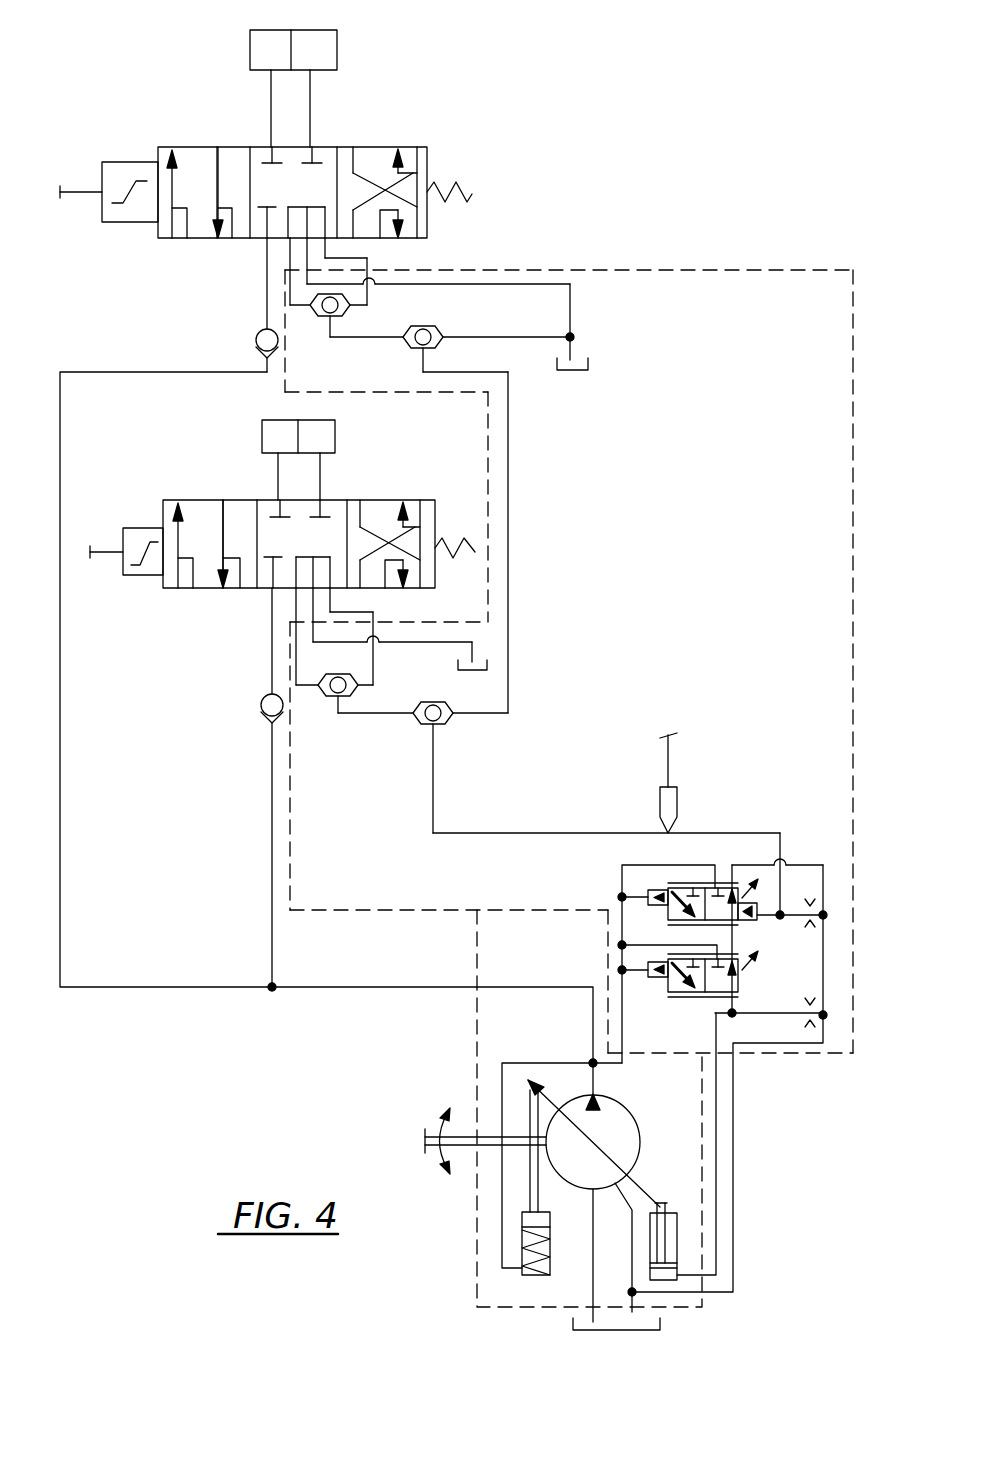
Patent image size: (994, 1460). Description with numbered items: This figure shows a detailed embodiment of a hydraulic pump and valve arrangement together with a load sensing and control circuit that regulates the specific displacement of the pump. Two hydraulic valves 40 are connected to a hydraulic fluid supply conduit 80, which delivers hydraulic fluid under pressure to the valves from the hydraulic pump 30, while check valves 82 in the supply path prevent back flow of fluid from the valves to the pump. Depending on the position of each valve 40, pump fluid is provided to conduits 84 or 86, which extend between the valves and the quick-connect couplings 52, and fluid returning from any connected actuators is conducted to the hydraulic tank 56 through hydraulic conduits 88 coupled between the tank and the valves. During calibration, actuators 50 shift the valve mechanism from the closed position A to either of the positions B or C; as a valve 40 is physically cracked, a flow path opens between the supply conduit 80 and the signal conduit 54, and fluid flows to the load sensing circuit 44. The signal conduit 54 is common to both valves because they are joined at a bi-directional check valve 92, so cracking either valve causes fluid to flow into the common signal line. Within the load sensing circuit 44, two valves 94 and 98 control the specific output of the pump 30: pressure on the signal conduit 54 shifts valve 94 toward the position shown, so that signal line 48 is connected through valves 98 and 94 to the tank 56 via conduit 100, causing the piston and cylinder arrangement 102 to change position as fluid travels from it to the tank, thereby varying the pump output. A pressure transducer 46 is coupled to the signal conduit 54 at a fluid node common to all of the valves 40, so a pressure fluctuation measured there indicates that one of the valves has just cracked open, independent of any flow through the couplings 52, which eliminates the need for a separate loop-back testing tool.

The hydraulic pump 30 is at (473, 1047).
The hydraulic valves 40 is at (418, 147).
The load sensing circuit 44 is at (760, 240).
The pressure transducer 46 is at (678, 793).
The signal line 48 is at (716, 1173).
The actuators 50 is at (135, 162).
The quick-connect couplings 52 is at (338, 48).
The signal conduit 54 is at (508, 440).
The hydraulic tank 56 is at (590, 363).
The hydraulic fluid supply conduit 80 is at (60, 848).
The check valves 82 is at (257, 342).
The conduit 84 is at (270, 87).
The conduit 86 is at (312, 87).
The hydraulic conduits 88 is at (527, 288).
The bi-directional check valve 92 is at (453, 716).
The valve 94 is at (680, 887).
The valve 98 is at (740, 953).
The conduit 100 is at (733, 1138).
The piston and cylinder arrangement 102 is at (677, 1245).
The closed position A is at (322, 147).
The valve position B is at (183, 147).
The valve position C is at (378, 147).